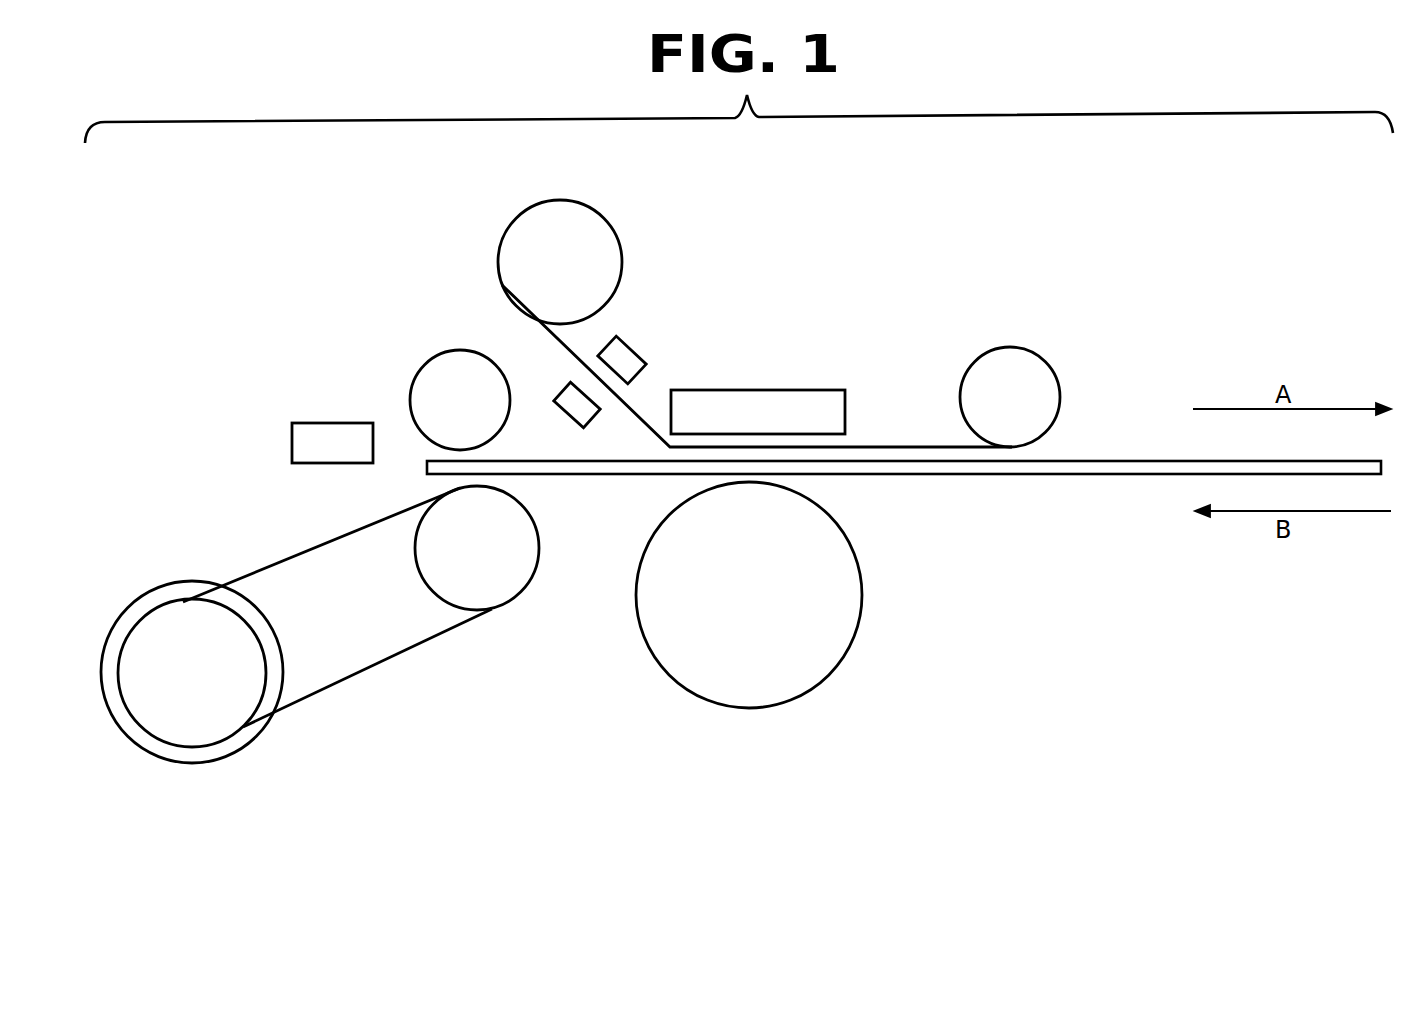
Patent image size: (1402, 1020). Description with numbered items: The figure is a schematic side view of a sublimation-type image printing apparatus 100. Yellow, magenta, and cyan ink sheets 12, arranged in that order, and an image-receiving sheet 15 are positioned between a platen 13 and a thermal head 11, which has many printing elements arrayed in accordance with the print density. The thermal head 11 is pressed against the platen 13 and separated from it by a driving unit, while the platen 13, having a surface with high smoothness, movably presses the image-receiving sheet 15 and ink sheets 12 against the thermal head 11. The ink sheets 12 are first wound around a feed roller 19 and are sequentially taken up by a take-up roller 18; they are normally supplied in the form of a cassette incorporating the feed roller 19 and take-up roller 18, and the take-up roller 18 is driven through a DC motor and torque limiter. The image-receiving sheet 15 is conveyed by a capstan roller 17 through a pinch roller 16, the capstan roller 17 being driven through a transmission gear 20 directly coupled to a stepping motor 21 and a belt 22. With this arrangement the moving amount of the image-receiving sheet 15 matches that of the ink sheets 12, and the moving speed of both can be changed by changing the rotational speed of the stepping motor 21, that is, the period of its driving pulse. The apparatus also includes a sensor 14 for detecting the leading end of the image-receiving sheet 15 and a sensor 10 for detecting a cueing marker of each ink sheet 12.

The sublimation-type image printing apparatus 100 is at (249, 210).
The sensor 10 is at (565, 383).
The thermal head 11 is at (765, 390).
The ink sheets 12 is at (640, 420).
The platen 13 is at (735, 709).
The sensor 14 is at (297, 423).
The image-receiving sheet 15 is at (915, 475).
The pinch roller 16 is at (437, 353).
The capstan roller 17 is at (508, 609).
The take-up roller 18 is at (553, 199).
The feed roller 19 is at (1010, 347).
The transmission gear 20 is at (135, 625).
The stepping motor 21 is at (182, 763).
The belt 22 is at (303, 698).